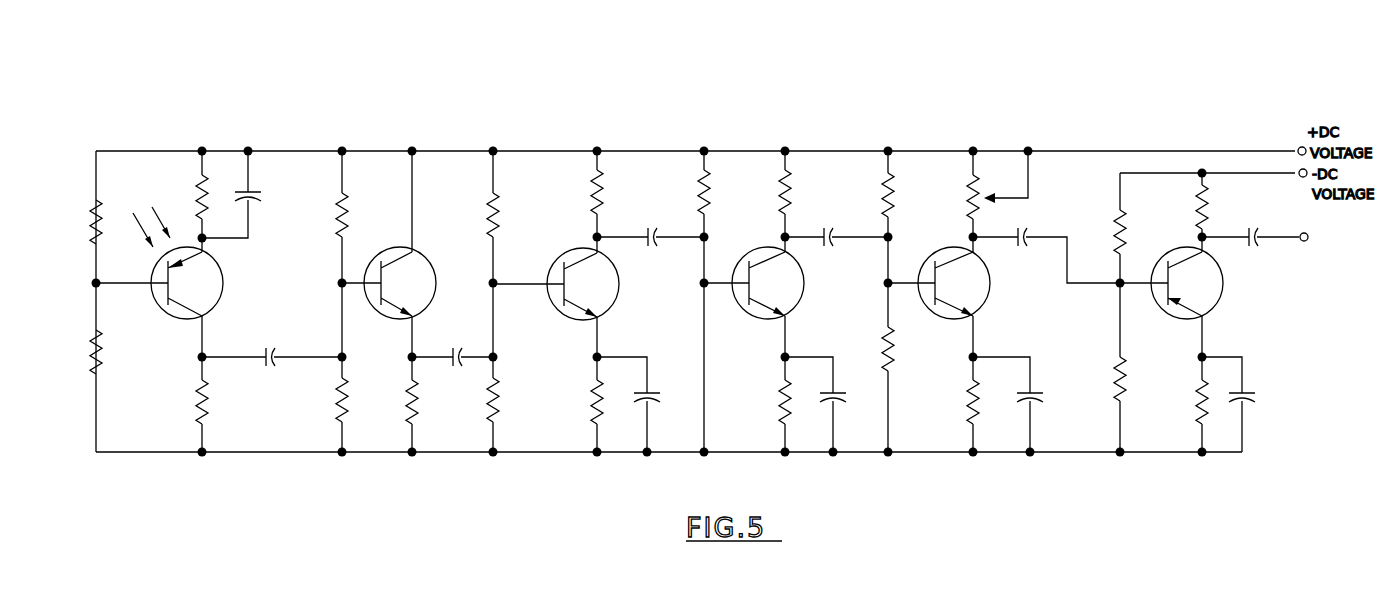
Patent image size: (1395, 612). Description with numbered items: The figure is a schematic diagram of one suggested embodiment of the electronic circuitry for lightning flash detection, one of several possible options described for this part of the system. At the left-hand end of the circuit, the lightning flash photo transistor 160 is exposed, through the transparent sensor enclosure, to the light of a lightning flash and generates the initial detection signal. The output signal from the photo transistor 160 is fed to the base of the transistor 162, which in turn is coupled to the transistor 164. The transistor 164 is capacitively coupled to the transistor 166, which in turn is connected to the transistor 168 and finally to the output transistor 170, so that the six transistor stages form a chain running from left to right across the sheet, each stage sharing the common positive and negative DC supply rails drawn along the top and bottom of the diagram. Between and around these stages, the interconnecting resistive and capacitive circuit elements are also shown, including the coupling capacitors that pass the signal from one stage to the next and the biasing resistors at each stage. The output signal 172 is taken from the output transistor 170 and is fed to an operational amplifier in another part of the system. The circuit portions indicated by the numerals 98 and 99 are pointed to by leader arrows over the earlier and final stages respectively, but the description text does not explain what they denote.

The photodetector amplifier circuit 98 is at (414, 82).
The output amplifier stage 99 is at (1158, 74).
The lightning flash photo transistor 160 is at (223, 284).
The transistor 162 is at (418, 252).
The transistor 164 is at (615, 300).
The transistor 166 is at (800, 300).
The transistor 168 is at (990, 298).
The output transistor 170 is at (1221, 300).
The output signal 172 is at (1291, 238).